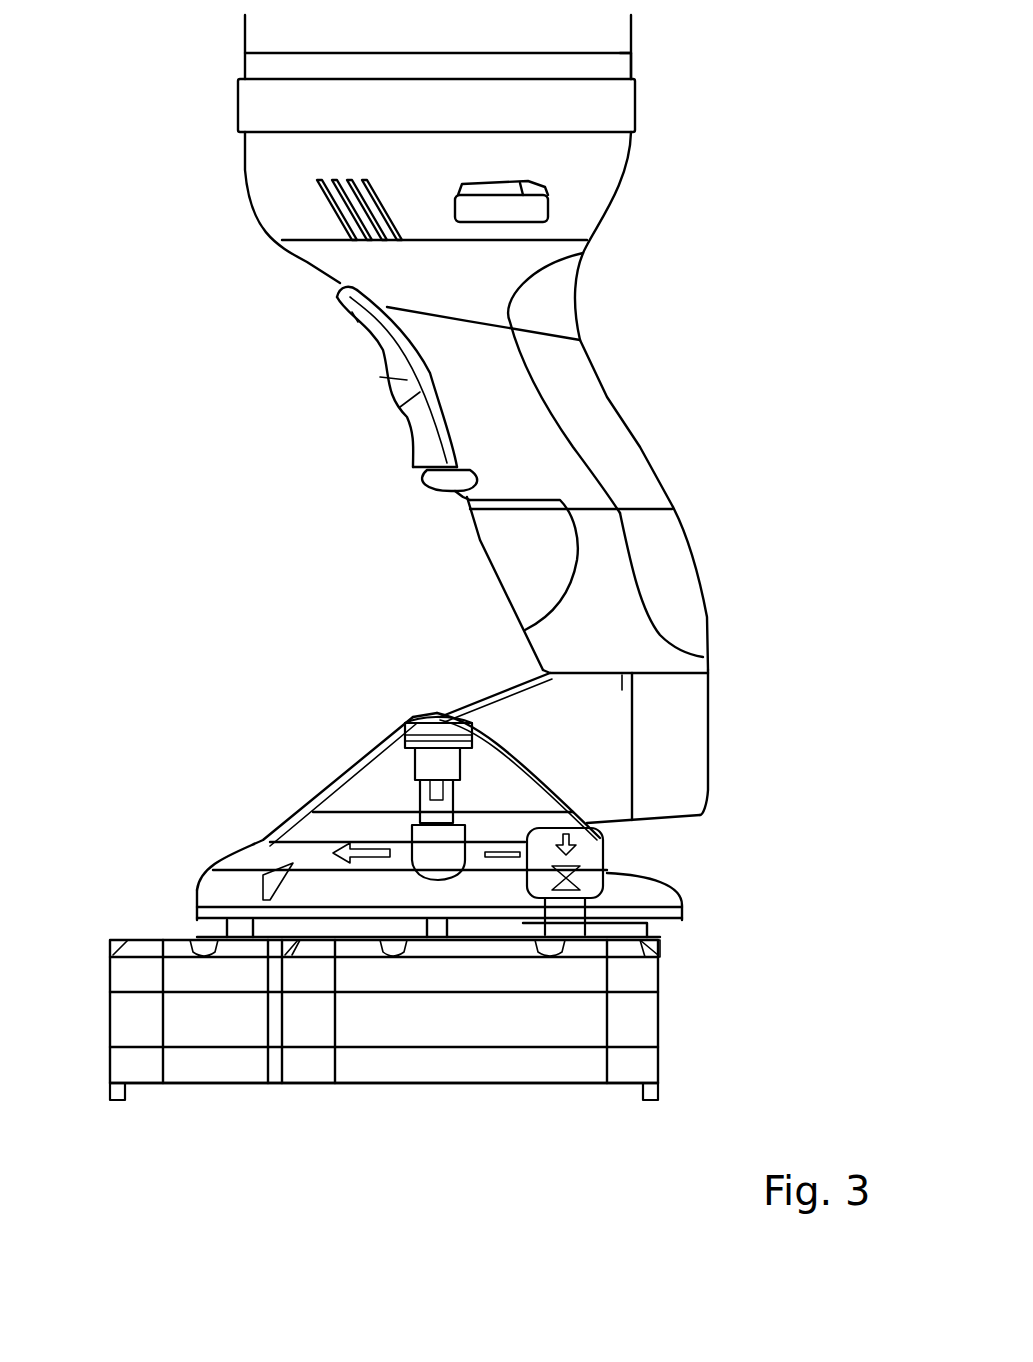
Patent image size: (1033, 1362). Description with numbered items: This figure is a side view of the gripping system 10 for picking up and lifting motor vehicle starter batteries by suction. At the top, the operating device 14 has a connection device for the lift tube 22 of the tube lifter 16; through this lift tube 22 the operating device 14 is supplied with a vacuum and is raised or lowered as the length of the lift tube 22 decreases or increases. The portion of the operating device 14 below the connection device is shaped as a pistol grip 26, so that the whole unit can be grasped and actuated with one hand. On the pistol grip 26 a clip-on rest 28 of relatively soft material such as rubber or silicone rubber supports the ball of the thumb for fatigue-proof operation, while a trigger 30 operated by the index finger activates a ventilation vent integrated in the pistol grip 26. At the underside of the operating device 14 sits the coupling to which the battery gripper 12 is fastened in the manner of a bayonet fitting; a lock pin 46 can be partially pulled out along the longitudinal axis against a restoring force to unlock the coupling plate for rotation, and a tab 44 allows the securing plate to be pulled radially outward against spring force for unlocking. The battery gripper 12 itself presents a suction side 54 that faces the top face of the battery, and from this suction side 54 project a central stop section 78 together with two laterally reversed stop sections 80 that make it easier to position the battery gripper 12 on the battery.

The gripping system 10 is at (716, 97).
The battery gripper 12 is at (630, 1020).
The operating device 14 is at (650, 640).
The tube lifter 16 is at (253, 32).
The lift tube 22 is at (617, 33).
The pistol grip 26 is at (613, 537).
The rest 28 is at (607, 420).
The trigger 30 is at (393, 340).
The tab 44 is at (583, 858).
The lock pin 46 is at (432, 730).
The suction side 54 is at (233, 1083).
The stop section 78 is at (113, 1092).
The stop sections 80 is at (650, 1095).